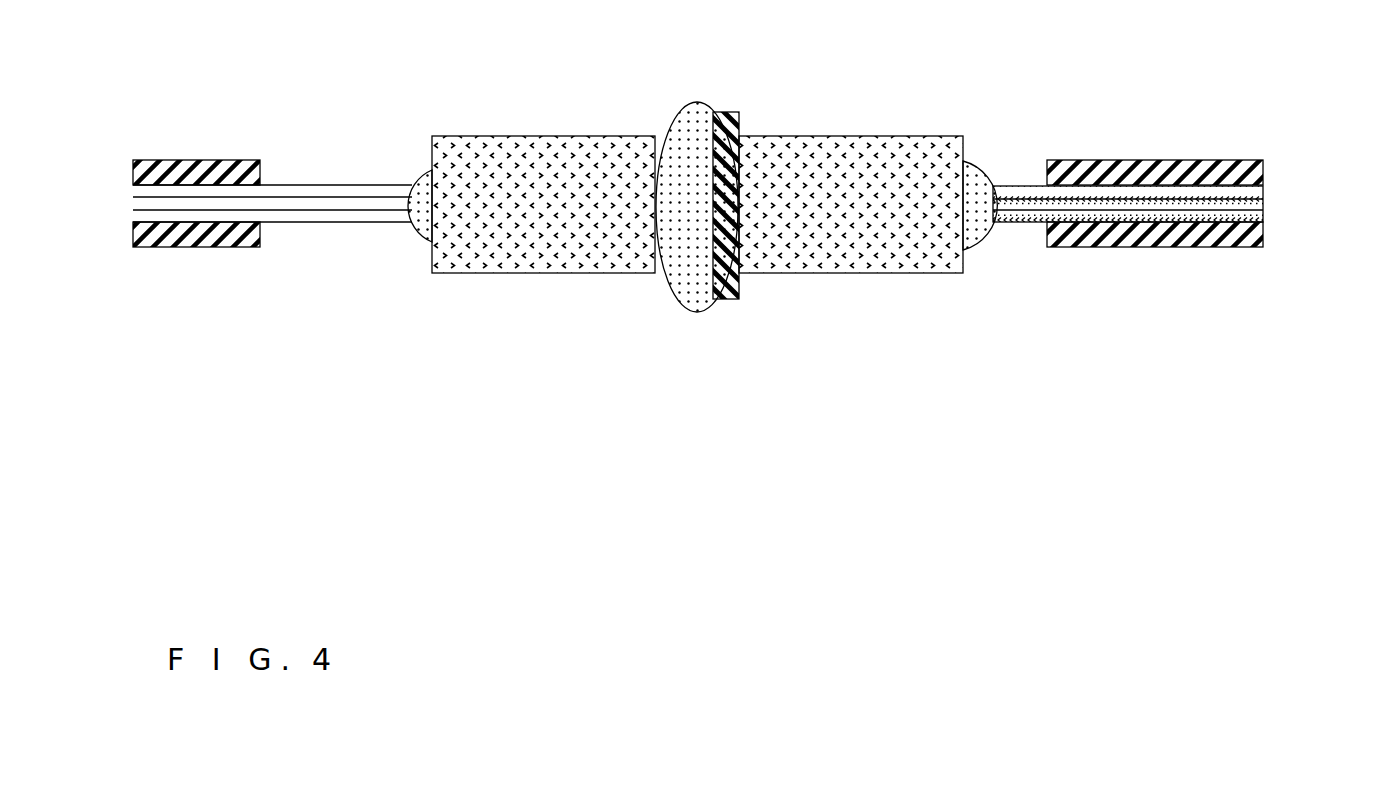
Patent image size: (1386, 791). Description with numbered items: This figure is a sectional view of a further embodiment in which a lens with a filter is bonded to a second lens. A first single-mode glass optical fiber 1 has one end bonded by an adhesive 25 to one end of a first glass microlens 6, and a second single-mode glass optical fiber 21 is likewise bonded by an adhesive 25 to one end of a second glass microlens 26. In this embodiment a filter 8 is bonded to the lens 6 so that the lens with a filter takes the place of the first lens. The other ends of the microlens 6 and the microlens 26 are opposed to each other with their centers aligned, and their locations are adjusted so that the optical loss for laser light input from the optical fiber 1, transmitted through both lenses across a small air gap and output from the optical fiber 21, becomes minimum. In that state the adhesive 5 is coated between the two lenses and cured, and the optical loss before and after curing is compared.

The optical fiber 1 is at (1058, 122).
The adhesive 5 is at (702, 115).
The microlens 6 is at (837, 143).
The filter 8 is at (739, 290).
The optical fiber 21 is at (288, 132).
The adhesive 25 is at (413, 178).
The microlens 26 is at (545, 143).